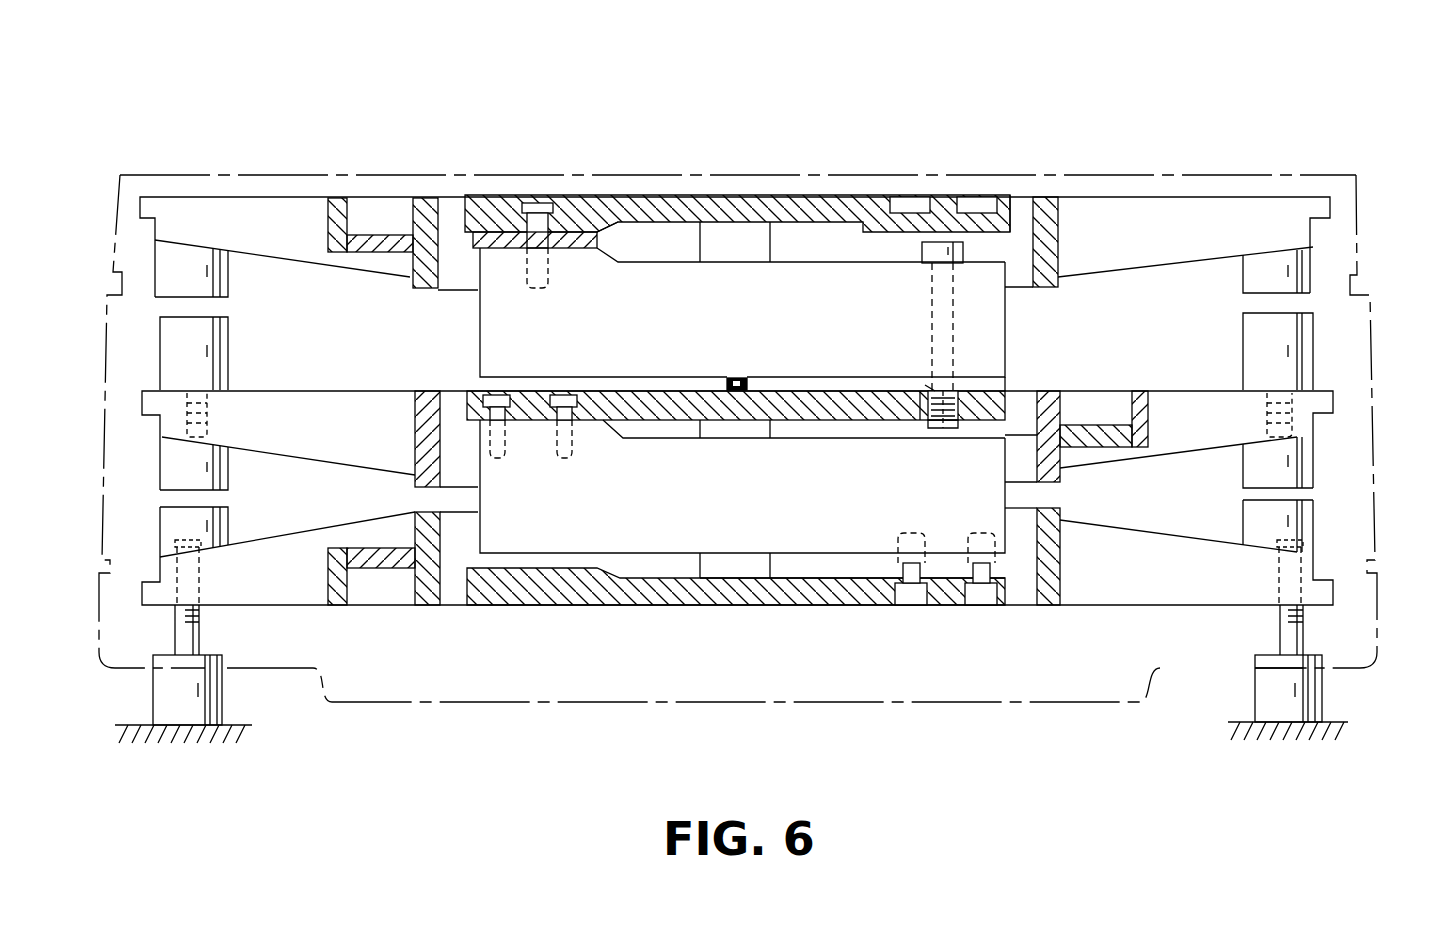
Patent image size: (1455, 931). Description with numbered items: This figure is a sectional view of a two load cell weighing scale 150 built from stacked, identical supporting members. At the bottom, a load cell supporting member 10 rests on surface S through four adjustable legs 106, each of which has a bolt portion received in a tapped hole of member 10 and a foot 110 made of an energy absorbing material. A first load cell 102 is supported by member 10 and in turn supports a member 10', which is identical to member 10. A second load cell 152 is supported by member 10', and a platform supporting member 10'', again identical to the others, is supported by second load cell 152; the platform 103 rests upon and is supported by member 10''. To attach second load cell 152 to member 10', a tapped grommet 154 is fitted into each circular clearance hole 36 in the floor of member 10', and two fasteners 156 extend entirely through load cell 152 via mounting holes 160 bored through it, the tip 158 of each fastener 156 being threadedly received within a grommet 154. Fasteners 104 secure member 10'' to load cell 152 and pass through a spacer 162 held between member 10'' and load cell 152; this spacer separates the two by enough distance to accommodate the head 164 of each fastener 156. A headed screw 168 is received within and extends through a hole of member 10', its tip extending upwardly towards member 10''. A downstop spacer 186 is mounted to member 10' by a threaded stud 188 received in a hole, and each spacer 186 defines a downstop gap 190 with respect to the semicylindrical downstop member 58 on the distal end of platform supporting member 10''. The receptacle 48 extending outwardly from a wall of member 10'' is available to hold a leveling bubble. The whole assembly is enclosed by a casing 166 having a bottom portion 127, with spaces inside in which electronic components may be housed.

The two load cell weighing scale 150 is at (990, 118).
The platform 103 is at (1243, 175).
The casing 166 is at (1377, 445).
The bottom portion 127 is at (698, 703).
The fasteners 104 is at (556, 215).
The downstop member 58 is at (157, 258).
The downstop gap 190 is at (215, 307).
The downstop spacer 186 is at (230, 353).
The receptacle 48 is at (398, 258).
The spacer 162 is at (600, 243).
The second load cell 152 is at (1007, 310).
The headed screw 168 is at (760, 378).
The head 164 is at (920, 248).
The mounting holes 160 is at (960, 343).
The fasteners 156 is at (943, 388).
The circular clearance hole 36 is at (920, 390).
The tapped grommet 154 is at (935, 415).
The tip 158 is at (945, 425).
The threaded stud 188 is at (207, 412).
The platform supporting member 10'' is at (1229, 294).
The member 10' is at (737, 416).
The load cell supporting member 10 is at (737, 590).
The first load cell 102 is at (813, 605).
The foot 110 is at (220, 662).
The adjustable legs 106 is at (245, 706).
The surface S is at (137, 722).